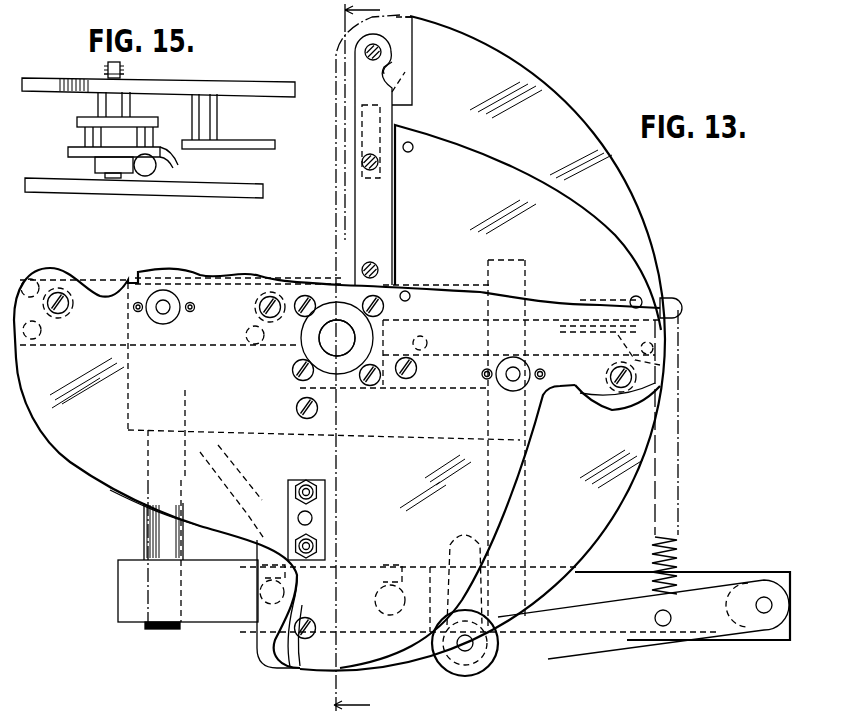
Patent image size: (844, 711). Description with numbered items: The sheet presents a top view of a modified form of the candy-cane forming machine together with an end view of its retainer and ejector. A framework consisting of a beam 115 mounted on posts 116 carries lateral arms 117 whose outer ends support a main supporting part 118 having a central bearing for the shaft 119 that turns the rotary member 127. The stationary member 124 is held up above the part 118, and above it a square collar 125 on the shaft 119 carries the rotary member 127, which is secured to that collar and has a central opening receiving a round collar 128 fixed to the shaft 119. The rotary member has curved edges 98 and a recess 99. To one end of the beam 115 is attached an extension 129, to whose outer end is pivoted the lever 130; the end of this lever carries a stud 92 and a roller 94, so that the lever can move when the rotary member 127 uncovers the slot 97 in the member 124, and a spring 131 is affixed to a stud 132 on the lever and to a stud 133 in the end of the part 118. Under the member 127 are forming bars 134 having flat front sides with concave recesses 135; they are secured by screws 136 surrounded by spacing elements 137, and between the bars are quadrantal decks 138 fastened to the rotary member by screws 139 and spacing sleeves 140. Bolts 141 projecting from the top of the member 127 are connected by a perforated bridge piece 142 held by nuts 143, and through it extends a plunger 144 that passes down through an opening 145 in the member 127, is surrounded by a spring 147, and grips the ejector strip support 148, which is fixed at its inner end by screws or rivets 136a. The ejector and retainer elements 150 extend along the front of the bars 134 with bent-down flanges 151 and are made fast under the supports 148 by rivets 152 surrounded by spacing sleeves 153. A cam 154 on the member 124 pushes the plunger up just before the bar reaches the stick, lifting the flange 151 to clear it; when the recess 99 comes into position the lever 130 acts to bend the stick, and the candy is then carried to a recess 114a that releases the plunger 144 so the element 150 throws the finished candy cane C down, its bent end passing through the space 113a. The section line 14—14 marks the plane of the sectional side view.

In FIG. 13, the section line 14— 14 is at (373, 357).
In FIG. 15, the candy canes C is at (150, 172).
In FIG. 13, the candy canes C is at (420, 22).
In FIG. 13, the stud 92 is at (463, 652).
In FIG. 13, the roller 94 is at (482, 675).
In FIG. 13, the slot 97 is at (443, 616).
In FIG. 13, the curved edges 98 is at (108, 483).
In FIG. 15, the recess 99 is at (70, 84).
In FIG. 13, the recess 99 is at (572, 388).
In FIG. 13, the recess 113a is at (413, 84).
In FIG. 13, the recess 114a is at (400, 186).
In FIG. 13, the beam 115 is at (123, 592).
In FIG. 13, the posts 116 is at (255, 635).
In FIG. 13, the lateral arms 117 is at (145, 532).
In FIG. 13, the main supporting part 118 is at (570, 287).
In FIG. 13, the shaft 119 is at (332, 332).
In FIG. 15, the stationary member 124 is at (158, 190).
In FIG. 13, the stationary member 124 is at (628, 182).
In FIG. 13, the square collar 125 is at (358, 395).
In FIG. 15, the rotary member 127 is at (266, 96).
In FIG. 13, the rotary member 127 is at (85, 445).
In FIG. 13, the round collar 128 is at (300, 362).
In FIG. 13, the extension 129 is at (722, 574).
In FIG. 13, the lever 130 is at (650, 652).
In FIG. 13, the spring 131 is at (678, 553).
In FIG. 13, the stud 132 is at (668, 625).
In FIG. 13, the stud 133 is at (682, 306).
In FIG. 15, the forming bars 134 is at (100, 168).
In FIG. 13, the forming bars 134 is at (325, 195).
In FIG. 13, the concave recesses 135 is at (383, 74).
In FIG. 13, the screws 136 is at (66, 294).
In FIG. 13, the screws or rivets 136a is at (270, 294).
In FIG. 15, the spacing elements 137 is at (130, 108).
In FIG. 15, the decks 138 is at (270, 150).
In FIG. 13, the decks 138 is at (503, 160).
In FIG. 13, the screws 139 is at (412, 293).
In FIG. 15, the spacing sleeves 140 is at (217, 124).
In FIG. 15, the bolts 141 is at (108, 62).
In FIG. 13, the bolts 141 is at (306, 487).
In FIG. 13, the bridge piece 142 is at (322, 522).
In FIG. 13, the nuts 143 is at (320, 546).
In FIG. 15, the plunger 144 is at (121, 77).
In FIG. 13, the plunger 144 is at (312, 512).
In FIG. 13, the opening 145 is at (180, 318).
In FIG. 13, the spring 147 is at (146, 710).
In FIG. 15, the ejector strip support 148 is at (77, 120).
In FIG. 13, the ejector strip support 148 is at (630, 410).
In FIG. 15, the ejector and retainer elements 150 is at (70, 152).
In FIG. 13, the ejector and retainer elements 150 is at (676, 370).
In FIG. 15, the flanges 151 is at (176, 164).
In FIG. 13, the rivets 152 is at (42, 330).
In FIG. 15, the spacing sleeves 153 is at (85, 138).
In FIG. 13, the cam 154 is at (238, 536).